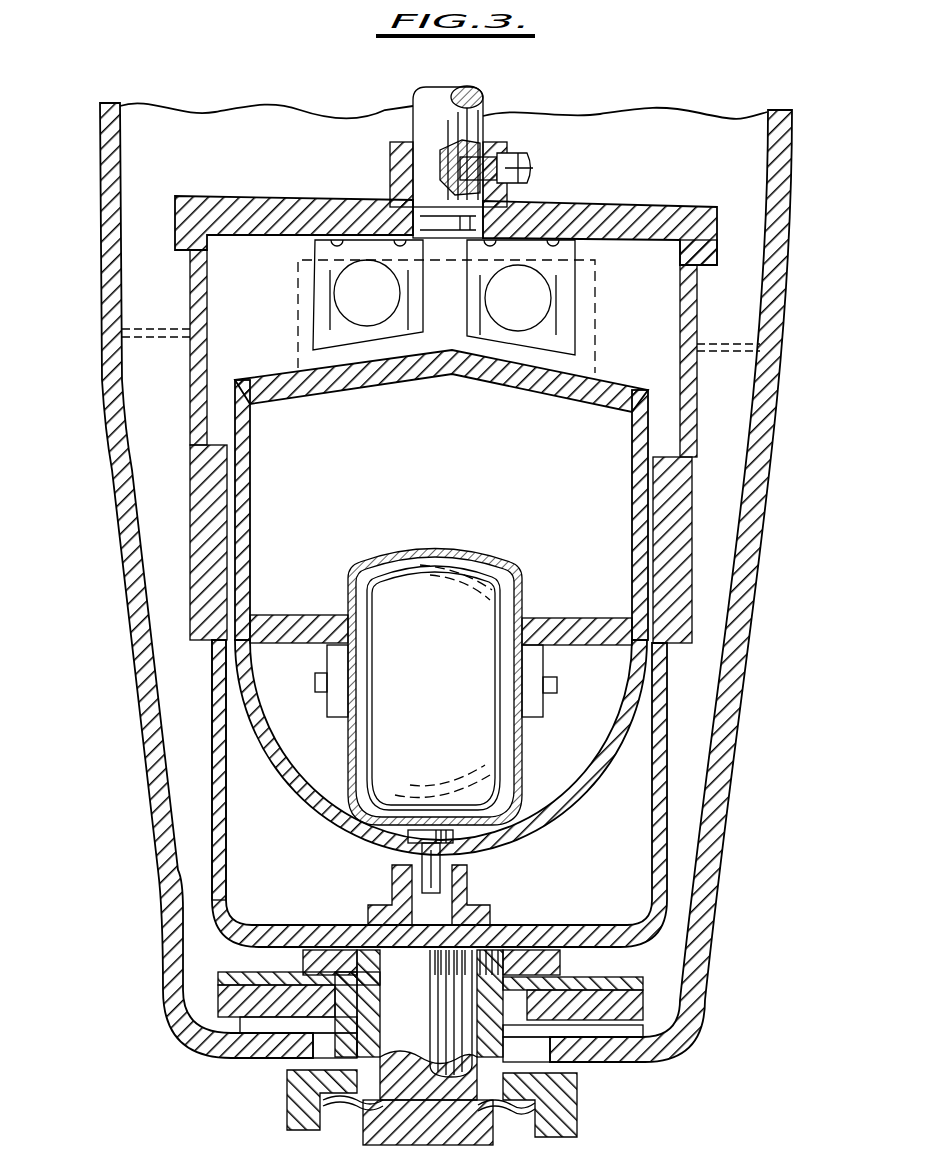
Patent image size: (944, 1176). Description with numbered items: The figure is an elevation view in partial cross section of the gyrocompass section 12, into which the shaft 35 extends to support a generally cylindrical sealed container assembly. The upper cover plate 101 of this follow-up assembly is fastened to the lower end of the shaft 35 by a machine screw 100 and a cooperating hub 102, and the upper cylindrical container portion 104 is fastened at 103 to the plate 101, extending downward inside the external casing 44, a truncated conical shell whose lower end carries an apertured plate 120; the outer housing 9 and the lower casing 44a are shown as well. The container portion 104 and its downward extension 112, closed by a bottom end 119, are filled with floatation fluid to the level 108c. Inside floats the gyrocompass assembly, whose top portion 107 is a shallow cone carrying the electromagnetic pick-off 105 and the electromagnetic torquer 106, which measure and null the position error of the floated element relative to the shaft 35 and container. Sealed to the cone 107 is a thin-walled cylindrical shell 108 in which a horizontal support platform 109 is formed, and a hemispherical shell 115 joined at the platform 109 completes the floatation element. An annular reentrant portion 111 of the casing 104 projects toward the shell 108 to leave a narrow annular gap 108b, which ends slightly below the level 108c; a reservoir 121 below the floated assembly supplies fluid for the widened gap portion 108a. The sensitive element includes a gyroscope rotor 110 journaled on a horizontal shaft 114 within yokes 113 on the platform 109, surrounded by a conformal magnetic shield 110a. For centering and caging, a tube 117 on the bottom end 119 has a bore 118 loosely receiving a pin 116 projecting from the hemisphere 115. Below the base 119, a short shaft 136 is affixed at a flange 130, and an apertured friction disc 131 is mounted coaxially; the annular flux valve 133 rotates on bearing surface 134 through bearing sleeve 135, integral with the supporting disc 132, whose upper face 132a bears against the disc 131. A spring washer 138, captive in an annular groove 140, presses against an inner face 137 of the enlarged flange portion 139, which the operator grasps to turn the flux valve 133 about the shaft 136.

The housing 9 is at (793, 192).
The gyrocompass section 12 is at (760, 692).
The shaft 35 is at (480, 92).
The external casing 44 is at (100, 212).
The casing 44a is at (134, 706).
The machine screw 100 is at (525, 166).
The upper cover plate 101 is at (648, 192).
The hub 102 is at (392, 160).
The fastening location 103 is at (712, 240).
The upper cylindrical container portion 104 is at (697, 312).
The electromagnetic pick-off 105 is at (448, 306).
The electromagnetic torquer 106 is at (338, 303).
The top portion 107 is at (628, 374).
The thin-walled shell 108 is at (250, 472).
The widened portion of the gap 108a is at (660, 446).
The annular gap 108b is at (242, 522).
The fluid level 108c is at (182, 412).
The support platform 109 is at (302, 616).
The gyroscope rotor 110 is at (450, 665).
The magnetic shield 110a is at (488, 562).
The annular reentrant portion 111 is at (190, 488).
The downward extension 112 is at (212, 694).
The yokes 113 is at (327, 695).
The shaft 114 is at (546, 676).
The hemispherical shell 115 is at (332, 822).
The pin 116 is at (455, 876).
The tube 117 is at (470, 906).
The cylindrical bore 118 is at (400, 900).
The bottom end 119 is at (325, 924).
The apertured plate 120 is at (620, 1032).
The reservoir 121 is at (282, 889).
The flange 130 is at (510, 949).
The apertured disc 131 is at (562, 964).
The flux valve supporting disc 132 is at (645, 996).
The upper face 132a is at (262, 972).
The flux valve 133 is at (218, 1010).
The cylindrical bearing surface 134 is at (441, 1013).
The bearing sleeve 135 is at (383, 1056).
The short shaft 136 is at (475, 1148).
The inner face 137 is at (550, 1101).
The spring washer 138 is at (526, 1128).
The enlarged flange portion 139 is at (285, 1100).
The annular groove 140 is at (356, 1136).